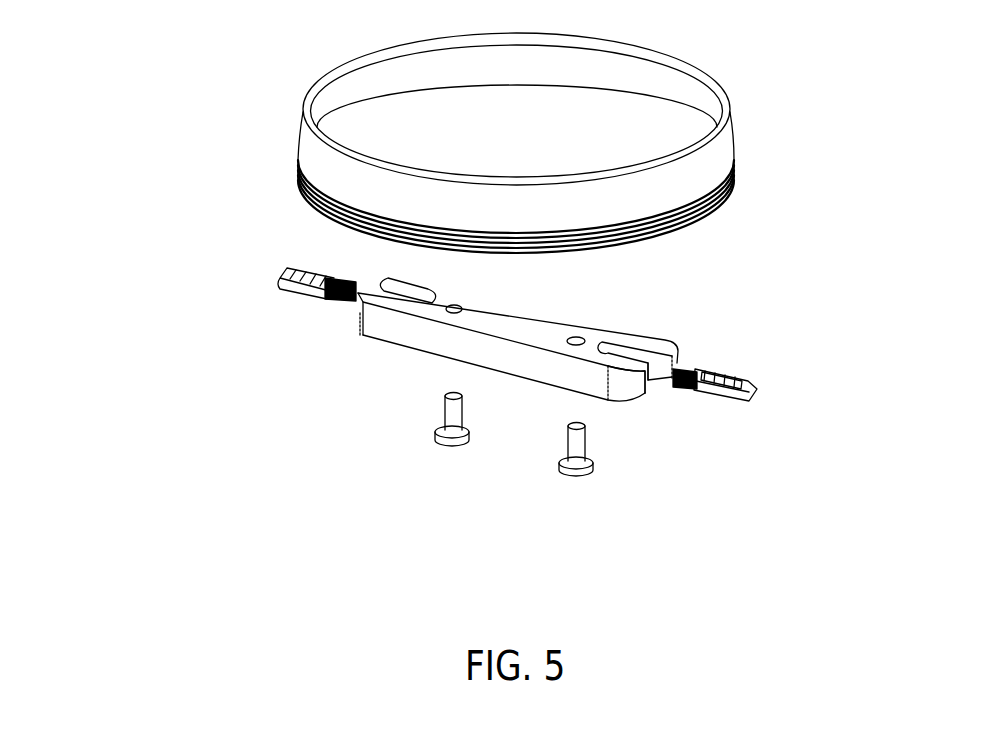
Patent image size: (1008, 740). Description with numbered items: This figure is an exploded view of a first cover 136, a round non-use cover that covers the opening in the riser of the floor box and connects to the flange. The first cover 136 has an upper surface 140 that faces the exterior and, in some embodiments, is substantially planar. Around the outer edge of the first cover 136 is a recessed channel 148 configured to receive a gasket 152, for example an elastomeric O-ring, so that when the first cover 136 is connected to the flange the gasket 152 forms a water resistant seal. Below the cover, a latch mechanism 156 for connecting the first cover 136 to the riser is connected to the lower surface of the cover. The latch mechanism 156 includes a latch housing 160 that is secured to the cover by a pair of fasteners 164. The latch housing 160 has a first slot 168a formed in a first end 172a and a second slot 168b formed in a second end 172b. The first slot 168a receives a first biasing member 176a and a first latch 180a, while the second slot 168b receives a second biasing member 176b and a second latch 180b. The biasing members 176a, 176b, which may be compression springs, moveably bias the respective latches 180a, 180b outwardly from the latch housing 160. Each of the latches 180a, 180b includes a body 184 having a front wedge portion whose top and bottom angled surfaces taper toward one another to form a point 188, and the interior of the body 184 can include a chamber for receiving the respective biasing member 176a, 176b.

The first cover 136 is at (188, 84).
The upper surface 140 is at (520, 137).
The gasket 152 is at (695, 80).
The recessed channel 148 is at (717, 196).
The latch mechanism 156 is at (381, 463).
The latch housing 160 is at (530, 334).
The fasteners 164 is at (573, 443).
The first slot 168a is at (405, 300).
The second slot 168b is at (627, 352).
The first end 172a is at (358, 296).
The second end 172b is at (620, 387).
The first biasing member 176a is at (338, 303).
The second biasing member 176b is at (688, 366).
The first latch 180a is at (290, 252).
The second latch 180b is at (738, 364).
The body 184 is at (305, 295).
The point 188 is at (757, 400).